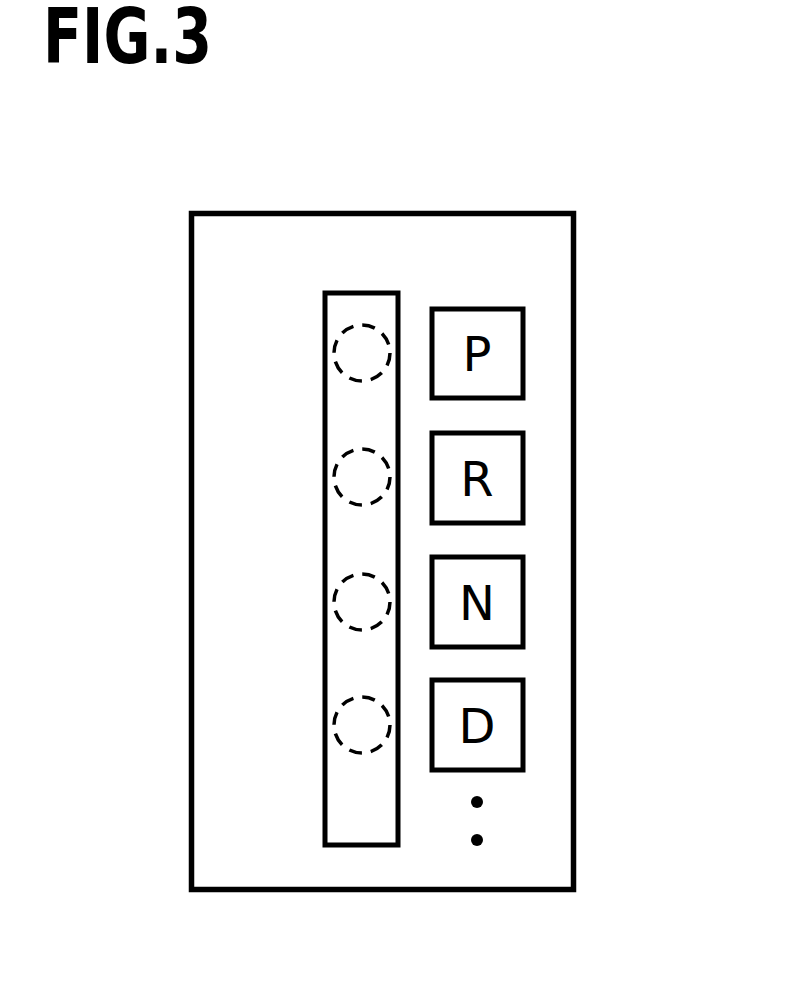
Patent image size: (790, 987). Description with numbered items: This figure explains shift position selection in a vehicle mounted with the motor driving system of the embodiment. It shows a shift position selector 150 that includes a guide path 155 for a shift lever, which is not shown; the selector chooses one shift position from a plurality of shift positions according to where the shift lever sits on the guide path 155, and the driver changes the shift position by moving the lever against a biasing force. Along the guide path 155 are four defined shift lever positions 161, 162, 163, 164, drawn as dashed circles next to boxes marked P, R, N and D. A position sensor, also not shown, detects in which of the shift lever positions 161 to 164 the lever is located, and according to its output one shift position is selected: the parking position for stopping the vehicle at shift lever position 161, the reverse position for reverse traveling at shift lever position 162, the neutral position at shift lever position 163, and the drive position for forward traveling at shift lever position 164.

The shift position selector 150 is at (537, 213).
The guide path 155 is at (370, 845).
The shift lever position 161 is at (363, 326).
The shift lever position 162 is at (372, 503).
The shift lever position 163 is at (372, 628).
The shift lever position 164 is at (372, 751).